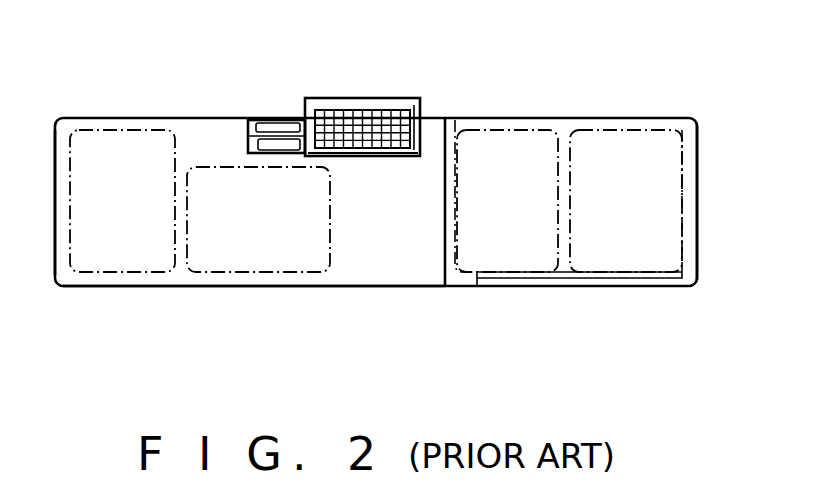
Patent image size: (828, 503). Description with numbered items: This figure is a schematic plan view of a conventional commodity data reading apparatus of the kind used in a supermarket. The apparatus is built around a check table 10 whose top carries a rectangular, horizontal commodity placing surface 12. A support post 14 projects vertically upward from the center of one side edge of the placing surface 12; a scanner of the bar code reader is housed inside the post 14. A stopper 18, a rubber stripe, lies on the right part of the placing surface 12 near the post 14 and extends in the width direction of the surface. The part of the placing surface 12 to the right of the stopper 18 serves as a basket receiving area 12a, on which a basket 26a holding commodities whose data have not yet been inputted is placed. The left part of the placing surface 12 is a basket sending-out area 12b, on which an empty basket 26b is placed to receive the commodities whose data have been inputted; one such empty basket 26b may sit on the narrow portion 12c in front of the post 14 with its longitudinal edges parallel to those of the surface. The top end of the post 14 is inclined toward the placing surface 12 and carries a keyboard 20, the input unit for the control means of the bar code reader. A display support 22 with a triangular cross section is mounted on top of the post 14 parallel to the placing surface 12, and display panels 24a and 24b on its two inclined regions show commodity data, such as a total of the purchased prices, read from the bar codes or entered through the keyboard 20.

The check table 10 is at (420, 290).
The commodity placing surface 12 is at (181, 274).
The basket receiving area 12a is at (688, 123).
The basket sending-out area 12b is at (66, 276).
The narrow portion 12c is at (360, 255).
The support post 14 is at (417, 101).
The stopper 18 is at (452, 127).
The keyboard 20 is at (355, 110).
The display support 22 is at (249, 127).
The display panel 24a is at (275, 147).
The display panel 24b is at (278, 125).
The basket 26a is at (600, 130).
The empty basket 26b is at (213, 165).